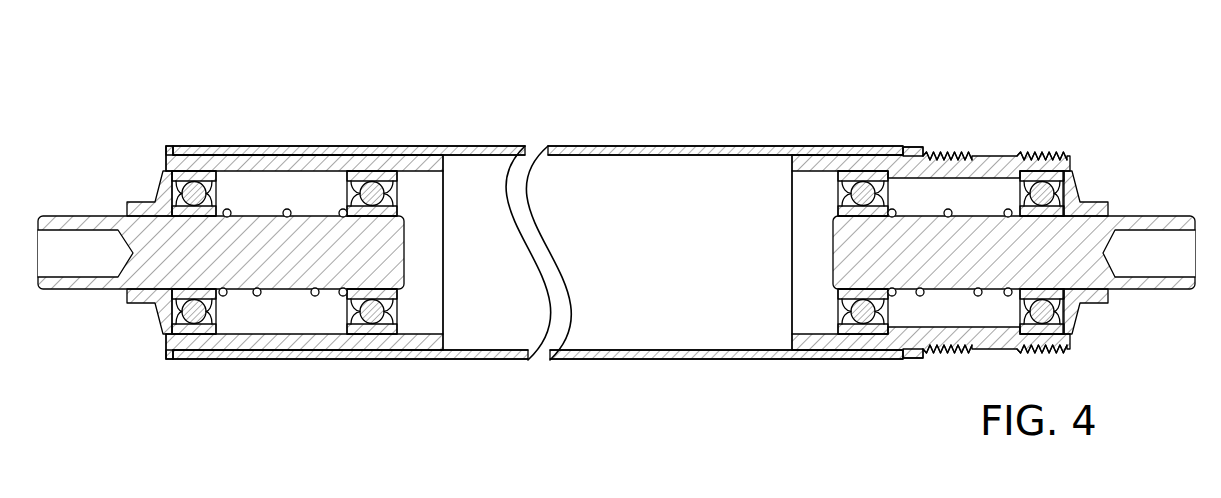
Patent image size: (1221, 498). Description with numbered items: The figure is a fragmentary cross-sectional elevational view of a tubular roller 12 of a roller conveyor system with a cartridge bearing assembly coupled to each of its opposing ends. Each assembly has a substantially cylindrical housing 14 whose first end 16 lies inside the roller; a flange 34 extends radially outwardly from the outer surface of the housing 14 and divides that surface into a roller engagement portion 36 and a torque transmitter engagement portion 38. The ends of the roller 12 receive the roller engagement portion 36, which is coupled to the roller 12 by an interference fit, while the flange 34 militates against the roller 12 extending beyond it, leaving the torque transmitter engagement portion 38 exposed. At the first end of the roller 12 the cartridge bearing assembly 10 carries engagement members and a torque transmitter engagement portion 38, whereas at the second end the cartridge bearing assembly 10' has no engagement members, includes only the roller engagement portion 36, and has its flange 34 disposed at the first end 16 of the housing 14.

The cartridge bearing assembly 10 is at (1018, 209).
The cartridge bearing assembly 10' is at (221, 209).
The roller 12 is at (500, 147).
The housing 14 is at (277, 341).
The first end 16 is at (167, 352).
The flange 34 is at (168, 146).
The roller engagement portion 36 is at (172, 128).
The torque transmitter engagement portion 38 is at (923, 127).